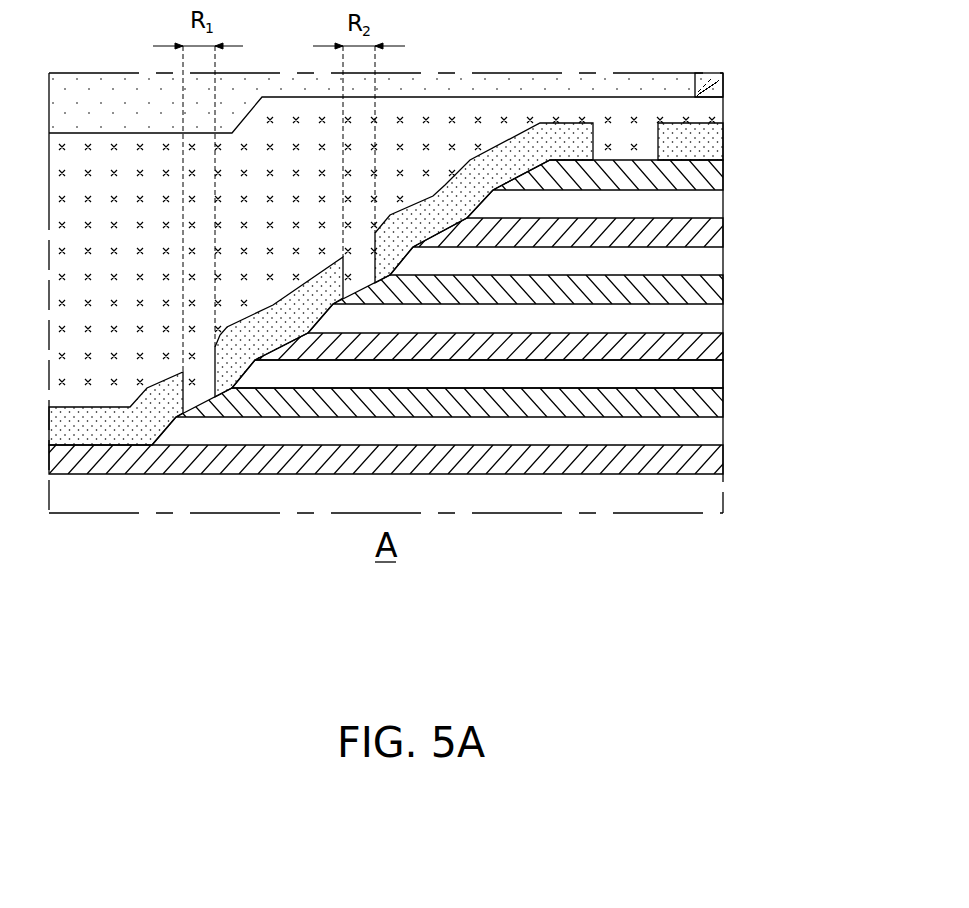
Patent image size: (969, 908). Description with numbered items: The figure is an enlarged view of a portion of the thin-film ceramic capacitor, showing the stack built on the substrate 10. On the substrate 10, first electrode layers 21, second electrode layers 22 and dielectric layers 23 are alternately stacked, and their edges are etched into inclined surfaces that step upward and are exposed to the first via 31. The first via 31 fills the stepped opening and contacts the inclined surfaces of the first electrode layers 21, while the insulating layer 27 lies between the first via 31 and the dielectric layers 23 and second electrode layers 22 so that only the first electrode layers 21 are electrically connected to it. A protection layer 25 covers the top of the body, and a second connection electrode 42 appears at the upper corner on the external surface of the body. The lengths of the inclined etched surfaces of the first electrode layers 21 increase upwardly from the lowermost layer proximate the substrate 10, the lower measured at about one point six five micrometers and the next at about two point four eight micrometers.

The substrate 10 is at (715, 493).
The first electrode layer 21 is at (724, 401).
The second electrode layer 22 is at (724, 457).
The dielectric layer 23 is at (724, 374).
The protection layer 25 is at (502, 80).
The insulating layer 27 is at (452, 188).
The first via 31 is at (280, 131).
The second connection electrode 42 is at (725, 83).